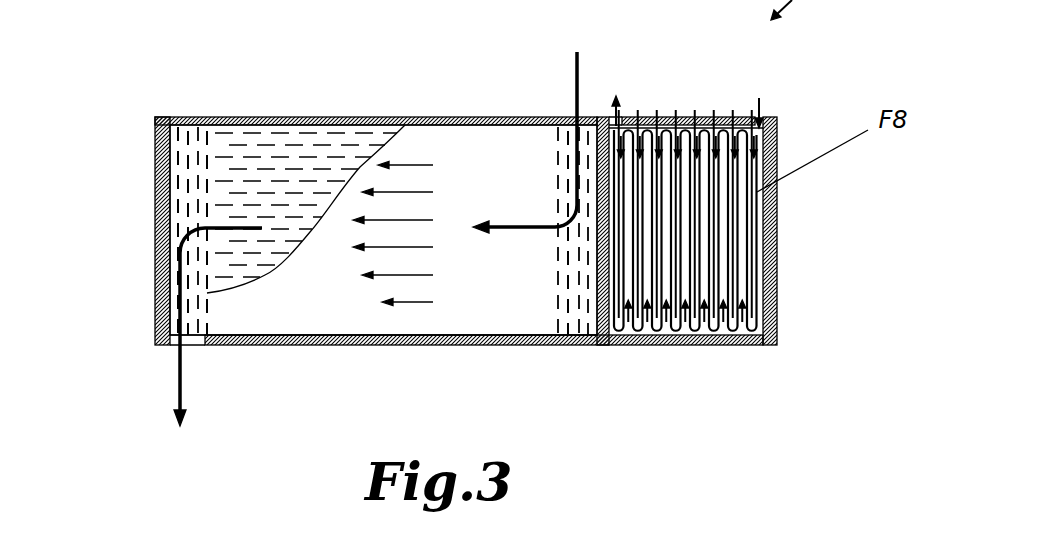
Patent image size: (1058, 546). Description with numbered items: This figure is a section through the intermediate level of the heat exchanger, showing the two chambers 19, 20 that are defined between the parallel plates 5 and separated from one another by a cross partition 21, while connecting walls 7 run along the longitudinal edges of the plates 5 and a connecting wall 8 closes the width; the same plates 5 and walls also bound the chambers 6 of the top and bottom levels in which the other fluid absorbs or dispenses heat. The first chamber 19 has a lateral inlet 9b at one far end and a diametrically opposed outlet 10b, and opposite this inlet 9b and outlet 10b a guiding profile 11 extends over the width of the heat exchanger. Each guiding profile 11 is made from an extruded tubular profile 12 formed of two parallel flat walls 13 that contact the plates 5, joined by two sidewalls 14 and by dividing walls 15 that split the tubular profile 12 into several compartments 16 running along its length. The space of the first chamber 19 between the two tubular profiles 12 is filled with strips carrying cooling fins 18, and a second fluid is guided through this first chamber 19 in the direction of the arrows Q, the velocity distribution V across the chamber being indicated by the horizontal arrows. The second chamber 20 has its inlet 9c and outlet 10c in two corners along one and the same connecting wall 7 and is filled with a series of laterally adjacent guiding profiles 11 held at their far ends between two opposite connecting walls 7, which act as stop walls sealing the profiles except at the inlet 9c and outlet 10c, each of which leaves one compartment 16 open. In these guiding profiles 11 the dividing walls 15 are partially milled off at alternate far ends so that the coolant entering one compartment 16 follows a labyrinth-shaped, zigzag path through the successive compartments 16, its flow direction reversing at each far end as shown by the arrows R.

The parallel plates 5 is at (437, 325).
The chambers 6 is at (388, 327).
The connecting walls 7 is at (372, 121).
The connecting wall 8 is at (155, 150).
The lateral inlet 9b is at (588, 120).
The inlet 9c is at (770, 115).
The outlet 10b is at (168, 345).
The outlet 10c is at (622, 120).
The guiding profile 11 is at (175, 302).
The tubular profile 12 is at (207, 293).
The flat walls 13 is at (165, 242).
The sidewalls 14 is at (207, 162).
The dividing walls 15 is at (168, 258).
The compartments 16 is at (205, 127).
The cooling fins 18 is at (305, 138).
The first chamber 19 is at (315, 328).
The second chamber 20 is at (712, 346).
The cross partition 21 is at (588, 343).
The arrows R is at (707, 118).
The arrows Q is at (378, 236).
The flow velocity V is at (404, 234).